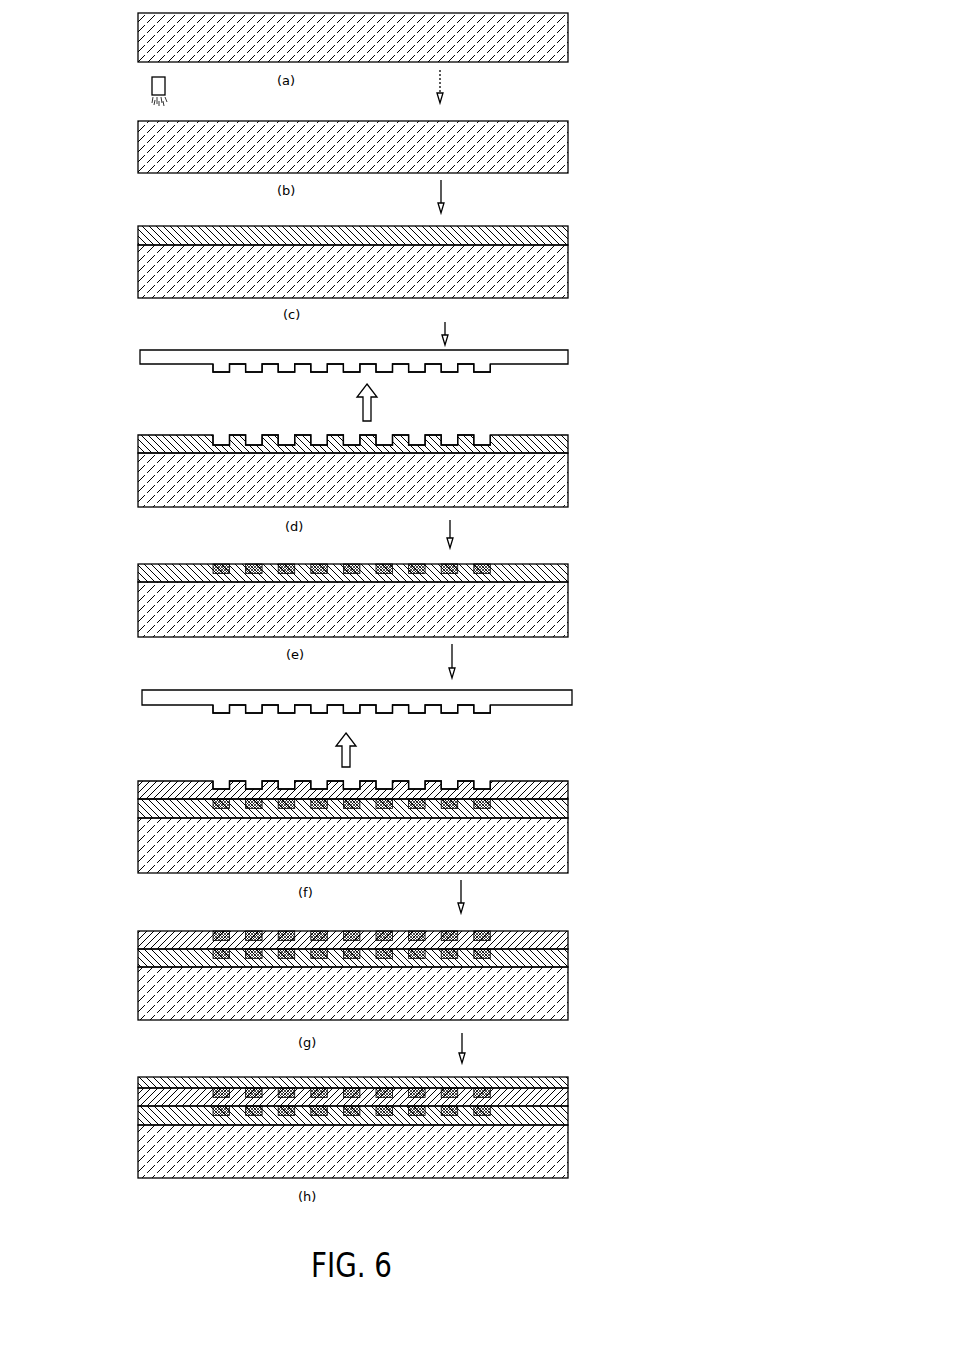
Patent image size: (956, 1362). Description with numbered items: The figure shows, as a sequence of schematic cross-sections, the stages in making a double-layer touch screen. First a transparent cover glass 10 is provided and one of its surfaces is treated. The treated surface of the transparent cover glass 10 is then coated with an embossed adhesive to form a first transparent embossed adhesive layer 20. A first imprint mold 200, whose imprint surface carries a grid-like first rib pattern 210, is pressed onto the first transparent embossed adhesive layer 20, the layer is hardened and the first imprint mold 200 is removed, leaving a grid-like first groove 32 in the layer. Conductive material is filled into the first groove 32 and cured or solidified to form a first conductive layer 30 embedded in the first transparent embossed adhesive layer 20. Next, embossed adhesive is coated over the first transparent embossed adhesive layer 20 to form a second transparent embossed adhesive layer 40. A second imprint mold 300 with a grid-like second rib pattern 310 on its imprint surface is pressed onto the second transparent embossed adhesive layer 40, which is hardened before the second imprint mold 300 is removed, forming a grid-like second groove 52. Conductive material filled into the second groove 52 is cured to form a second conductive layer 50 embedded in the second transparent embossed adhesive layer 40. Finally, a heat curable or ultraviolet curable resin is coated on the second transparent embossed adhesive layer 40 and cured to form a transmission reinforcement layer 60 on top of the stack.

The transparent cover glass 10 is at (540, 54).
The first transparent embossed adhesive layer 20 is at (141, 236).
The first imprint mold 200 is at (152, 361).
The first rib pattern 210 is at (216, 373).
The first groove 32 is at (483, 434).
The first conductive layer 30 is at (488, 563).
The second imprint mold 300 is at (165, 697).
The second rib pattern 310 is at (216, 713).
The second groove 52 is at (483, 779).
The second transparent embossed adhesive layer 40 is at (142, 787).
The second conductive layer 50 is at (490, 930).
The transmission reinforcement layer 60 is at (500, 1085).